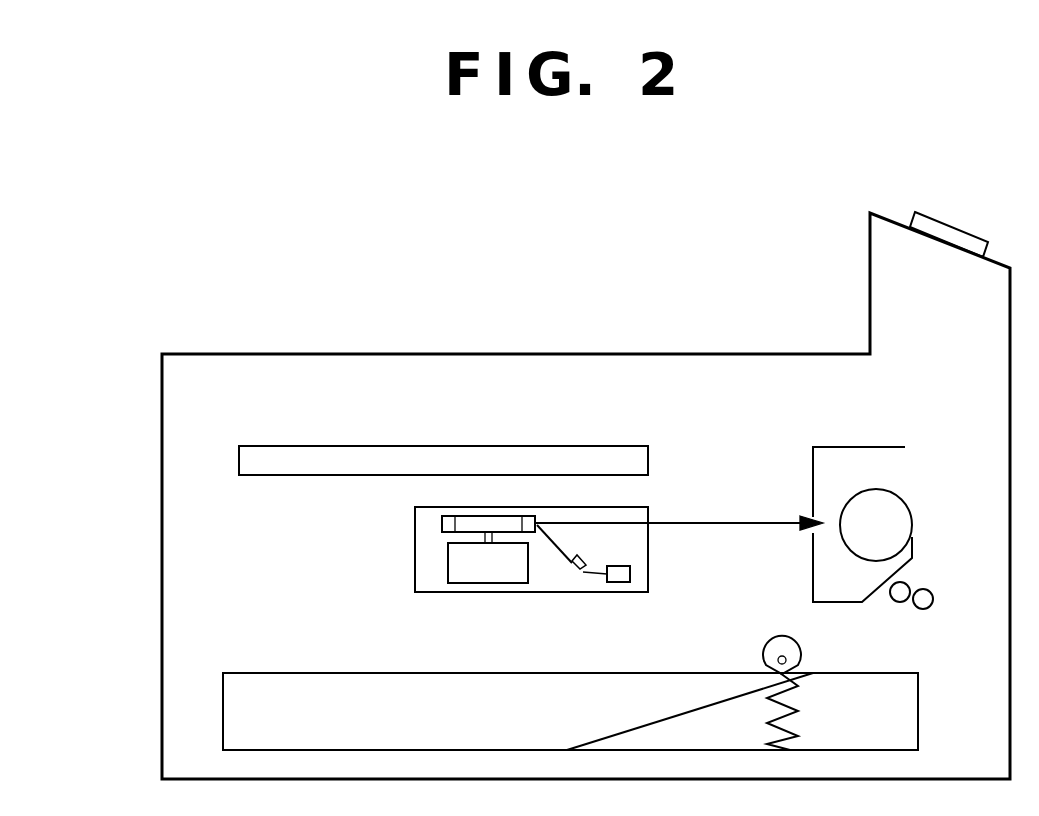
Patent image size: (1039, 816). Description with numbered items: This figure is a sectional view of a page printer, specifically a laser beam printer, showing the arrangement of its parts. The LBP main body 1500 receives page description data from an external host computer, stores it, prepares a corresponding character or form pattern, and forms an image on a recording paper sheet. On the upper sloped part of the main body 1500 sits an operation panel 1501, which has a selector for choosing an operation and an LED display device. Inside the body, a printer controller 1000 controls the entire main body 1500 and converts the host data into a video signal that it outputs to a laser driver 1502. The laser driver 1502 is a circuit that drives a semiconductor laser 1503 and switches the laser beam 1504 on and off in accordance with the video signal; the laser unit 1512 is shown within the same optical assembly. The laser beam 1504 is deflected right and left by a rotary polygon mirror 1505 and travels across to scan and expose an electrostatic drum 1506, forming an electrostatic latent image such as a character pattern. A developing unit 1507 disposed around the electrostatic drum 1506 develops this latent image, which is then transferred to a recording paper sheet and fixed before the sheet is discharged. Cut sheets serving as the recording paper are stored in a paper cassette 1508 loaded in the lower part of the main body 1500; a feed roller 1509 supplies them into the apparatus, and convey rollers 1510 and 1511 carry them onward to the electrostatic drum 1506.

The LBP main body 1500 is at (868, 252).
The operation panel 1501 is at (933, 216).
The printer controller 1000 is at (296, 446).
The rotary polygon mirror 1505 is at (442, 521).
The laser unit 1512 is at (447, 565).
The laser beam 1504 is at (693, 523).
The semiconductor laser 1503 is at (577, 573).
The laser driver 1502 is at (630, 574).
The developing unit 1507 is at (853, 446).
The electrostatic drum 1506 is at (900, 513).
The convey roller 1510 is at (908, 586).
The convey roller 1511 is at (923, 609).
The paper cassette 1508 is at (332, 673).
The feed roller 1509 is at (764, 652).